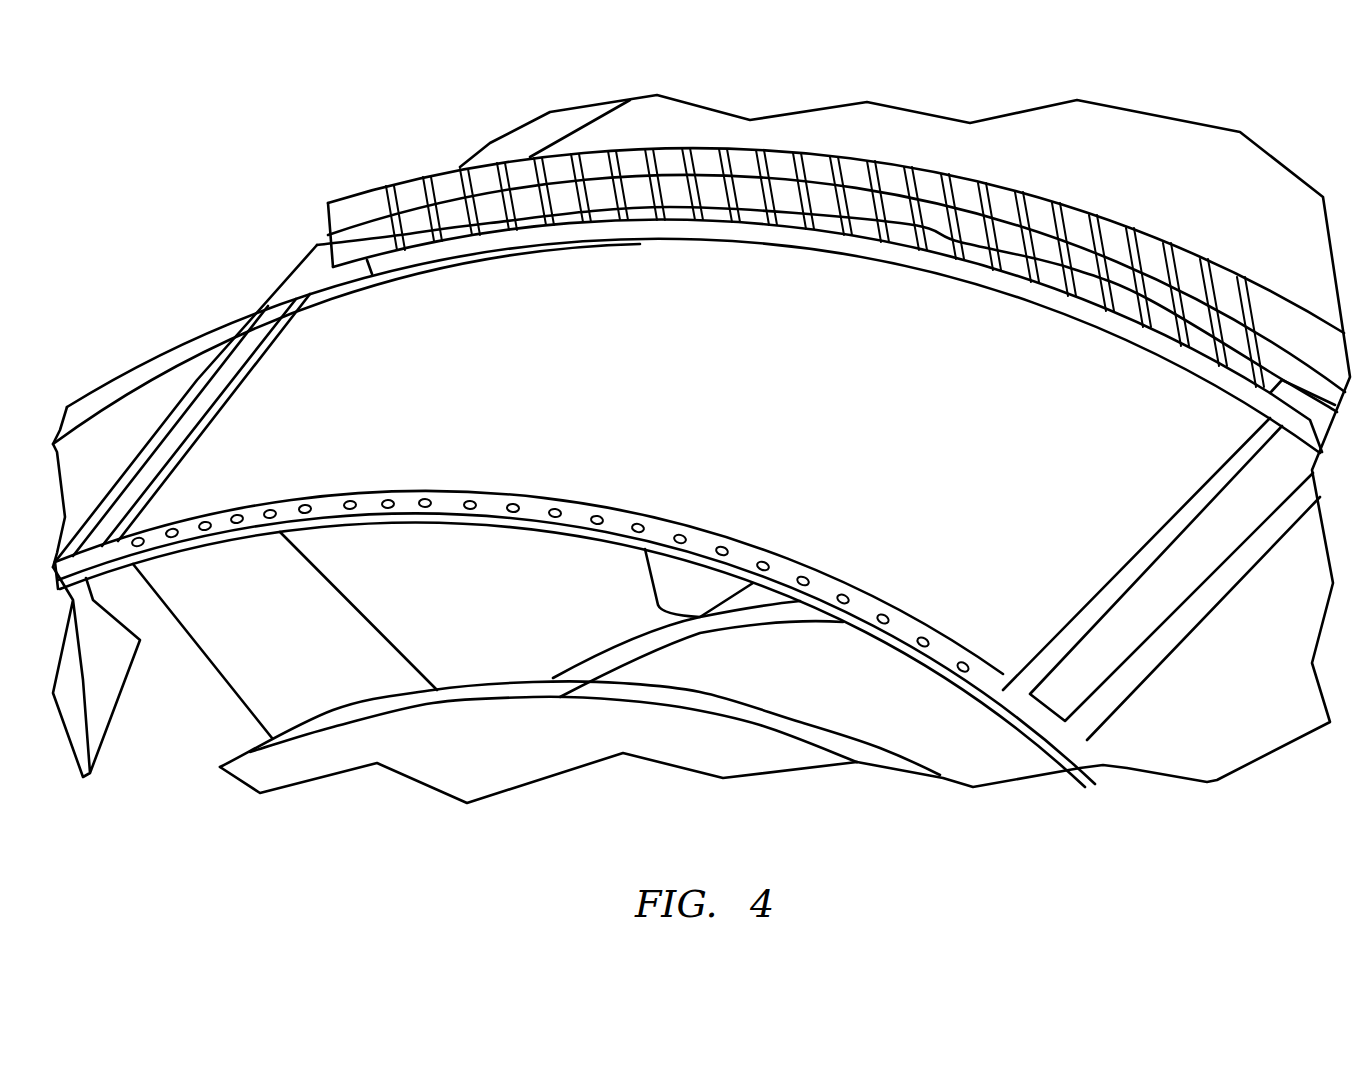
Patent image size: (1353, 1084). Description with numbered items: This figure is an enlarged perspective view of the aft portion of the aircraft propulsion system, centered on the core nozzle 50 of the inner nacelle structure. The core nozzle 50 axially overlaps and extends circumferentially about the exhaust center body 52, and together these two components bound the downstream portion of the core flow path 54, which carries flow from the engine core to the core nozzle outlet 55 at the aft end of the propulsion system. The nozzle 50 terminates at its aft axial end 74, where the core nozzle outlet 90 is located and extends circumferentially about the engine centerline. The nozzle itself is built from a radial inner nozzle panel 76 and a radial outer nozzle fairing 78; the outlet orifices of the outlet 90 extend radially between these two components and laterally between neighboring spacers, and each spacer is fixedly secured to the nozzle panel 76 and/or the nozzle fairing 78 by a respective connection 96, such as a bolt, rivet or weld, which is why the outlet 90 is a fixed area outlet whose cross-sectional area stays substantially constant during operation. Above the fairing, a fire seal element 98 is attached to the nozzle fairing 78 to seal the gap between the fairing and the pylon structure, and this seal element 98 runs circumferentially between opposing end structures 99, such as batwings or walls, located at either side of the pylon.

The core nozzle 50 is at (150, 345).
The exhaust center body 52 is at (488, 772).
The core flow path 54 is at (128, 705).
The core nozzle outlet 55 is at (187, 737).
The nozzle aft axial end 74 is at (587, 531).
The radial inner nozzle panel 76 is at (488, 528).
The radial outer nozzle fairing 78 is at (335, 325).
The core nozzle outlet 90 is at (378, 520).
The connection 96 is at (388, 501).
The seal element 98 is at (420, 180).
The end structure 99 is at (320, 240).